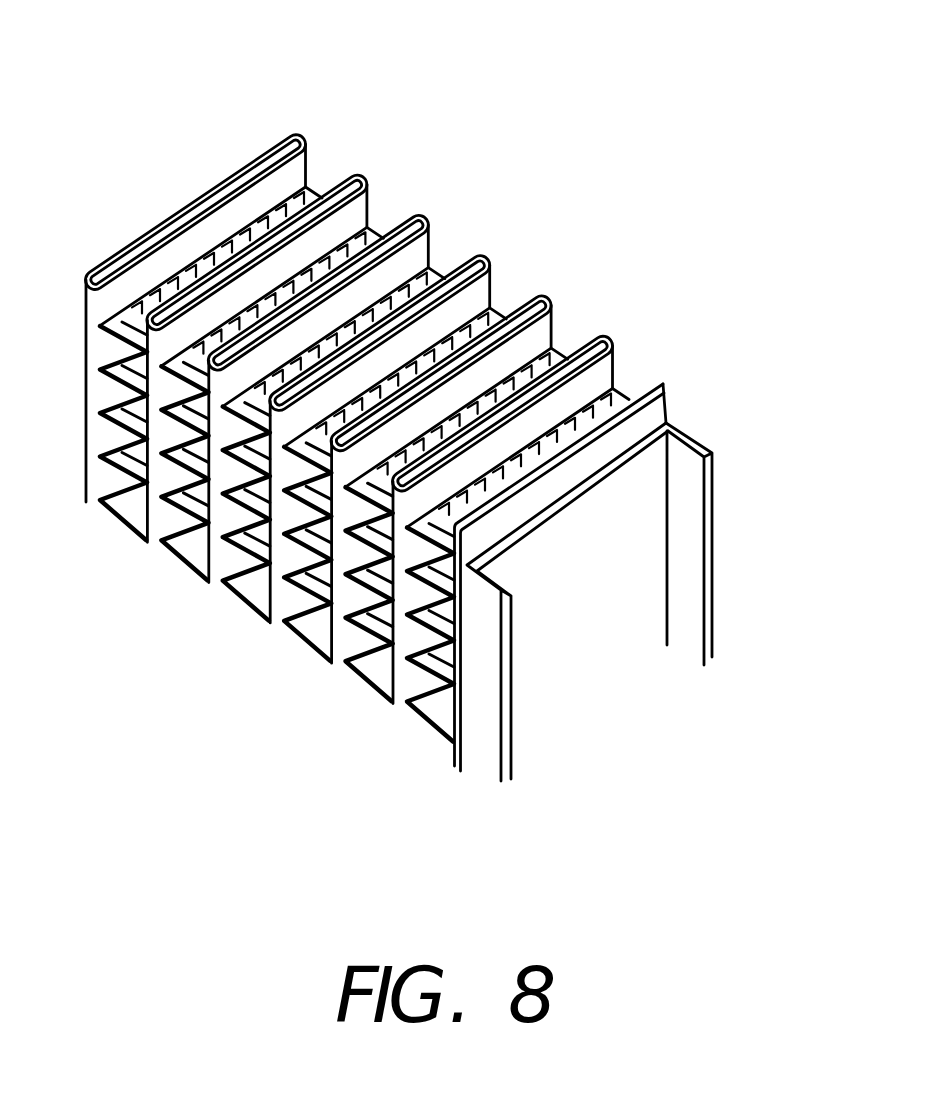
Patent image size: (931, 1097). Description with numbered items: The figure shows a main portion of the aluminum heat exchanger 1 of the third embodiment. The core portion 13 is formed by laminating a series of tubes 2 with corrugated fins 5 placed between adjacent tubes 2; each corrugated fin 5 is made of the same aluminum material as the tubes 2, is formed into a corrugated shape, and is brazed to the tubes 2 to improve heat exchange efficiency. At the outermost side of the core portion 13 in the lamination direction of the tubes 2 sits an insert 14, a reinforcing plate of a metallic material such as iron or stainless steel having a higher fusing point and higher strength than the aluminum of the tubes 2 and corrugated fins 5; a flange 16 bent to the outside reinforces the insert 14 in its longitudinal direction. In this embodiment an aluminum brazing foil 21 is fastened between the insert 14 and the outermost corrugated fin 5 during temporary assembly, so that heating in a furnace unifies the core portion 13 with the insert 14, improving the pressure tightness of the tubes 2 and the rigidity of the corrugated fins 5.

The aluminum heat exchanger 1 is at (123, 138).
The tube 2 is at (417, 500).
The corrugated fin 5 is at (438, 620).
The core portion 13 is at (700, 412).
The insert 14 is at (637, 592).
The flange 16 is at (708, 611).
The aluminum brazing foil 21 is at (670, 400).